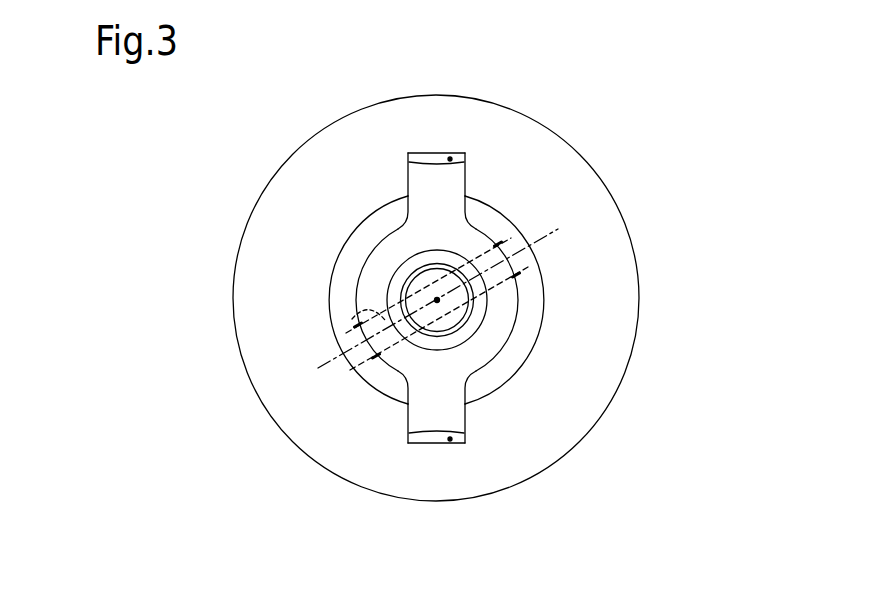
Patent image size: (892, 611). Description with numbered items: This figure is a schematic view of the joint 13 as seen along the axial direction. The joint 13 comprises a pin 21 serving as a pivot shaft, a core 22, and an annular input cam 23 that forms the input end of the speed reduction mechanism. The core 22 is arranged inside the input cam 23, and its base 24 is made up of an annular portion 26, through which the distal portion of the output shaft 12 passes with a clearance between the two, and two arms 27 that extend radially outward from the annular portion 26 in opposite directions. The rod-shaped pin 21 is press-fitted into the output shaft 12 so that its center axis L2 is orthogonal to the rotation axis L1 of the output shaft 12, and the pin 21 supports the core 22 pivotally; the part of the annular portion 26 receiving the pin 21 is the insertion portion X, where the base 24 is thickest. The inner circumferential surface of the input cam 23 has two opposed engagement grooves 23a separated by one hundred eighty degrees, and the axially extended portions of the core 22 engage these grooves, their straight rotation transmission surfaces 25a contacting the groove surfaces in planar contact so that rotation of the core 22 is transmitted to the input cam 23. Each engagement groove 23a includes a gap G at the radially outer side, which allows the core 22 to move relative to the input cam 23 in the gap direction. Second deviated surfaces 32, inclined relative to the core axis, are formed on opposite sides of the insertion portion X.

The joint 13 is at (597, 125).
The input cam 23 is at (640, 288).
The engagement groove 23a is at (422, 156).
The rotation transmission surface 25a is at (407, 181).
The arm 27 is at (433, 203).
The gap G is at (450, 157).
The annular portion 26 is at (491, 300).
The base 24 is at (503, 332).
The second deviated surface 32 is at (373, 262).
The core 22 is at (355, 292).
The pin 21 is at (352, 318).
The output shaft 12 is at (438, 340).
The rotation axis L1 is at (437, 297).
The center axis L2 is at (540, 238).
The insertion portion X is at (505, 268).